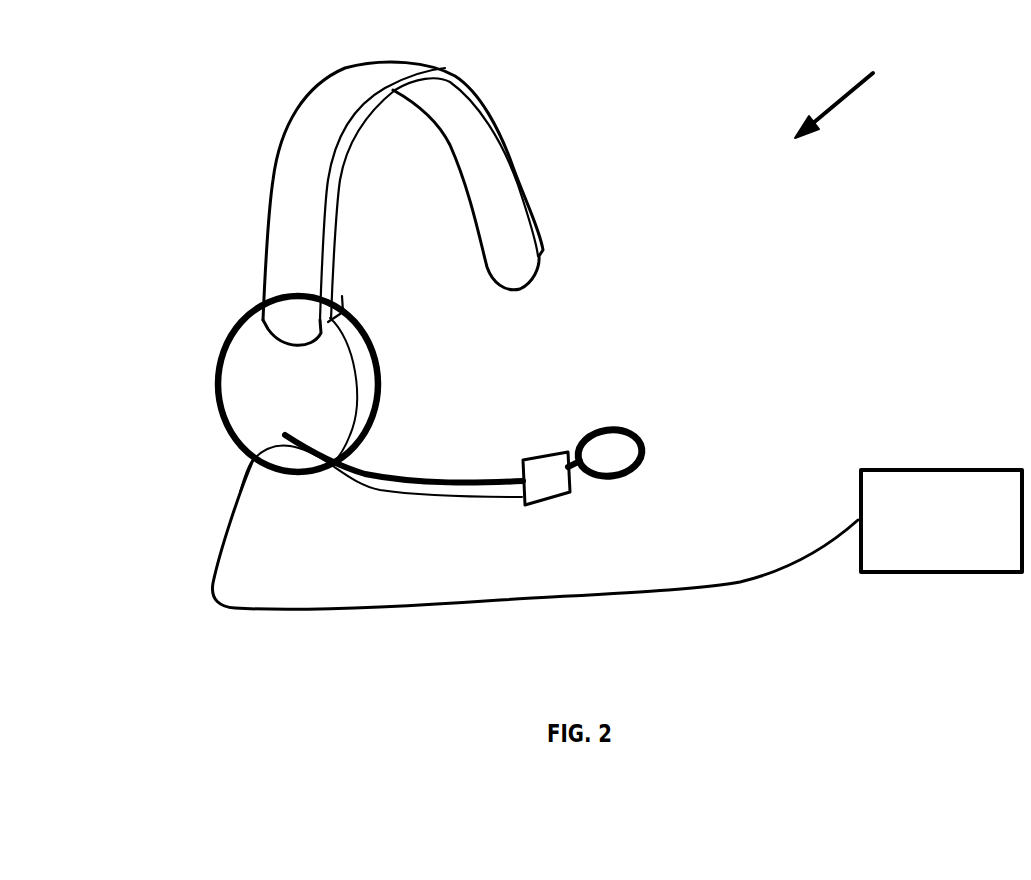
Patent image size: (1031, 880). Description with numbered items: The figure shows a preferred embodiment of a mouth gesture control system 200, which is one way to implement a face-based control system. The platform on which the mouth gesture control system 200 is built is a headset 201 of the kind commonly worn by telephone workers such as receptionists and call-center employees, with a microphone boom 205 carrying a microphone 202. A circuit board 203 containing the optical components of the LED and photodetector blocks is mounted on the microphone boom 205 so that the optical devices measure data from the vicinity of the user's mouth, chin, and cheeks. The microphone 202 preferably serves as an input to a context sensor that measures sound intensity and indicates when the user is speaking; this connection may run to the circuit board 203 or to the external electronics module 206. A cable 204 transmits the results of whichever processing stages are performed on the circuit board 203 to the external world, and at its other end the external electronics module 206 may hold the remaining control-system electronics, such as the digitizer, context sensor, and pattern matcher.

The mouth gesture control system 200 is at (861, 88).
The headset 201 is at (302, 92).
The microphone 202 is at (610, 429).
The circuit board 203 is at (543, 505).
The cable 204 is at (237, 517).
The microphone boom 205 is at (381, 465).
The external electronics module 206 is at (958, 470).